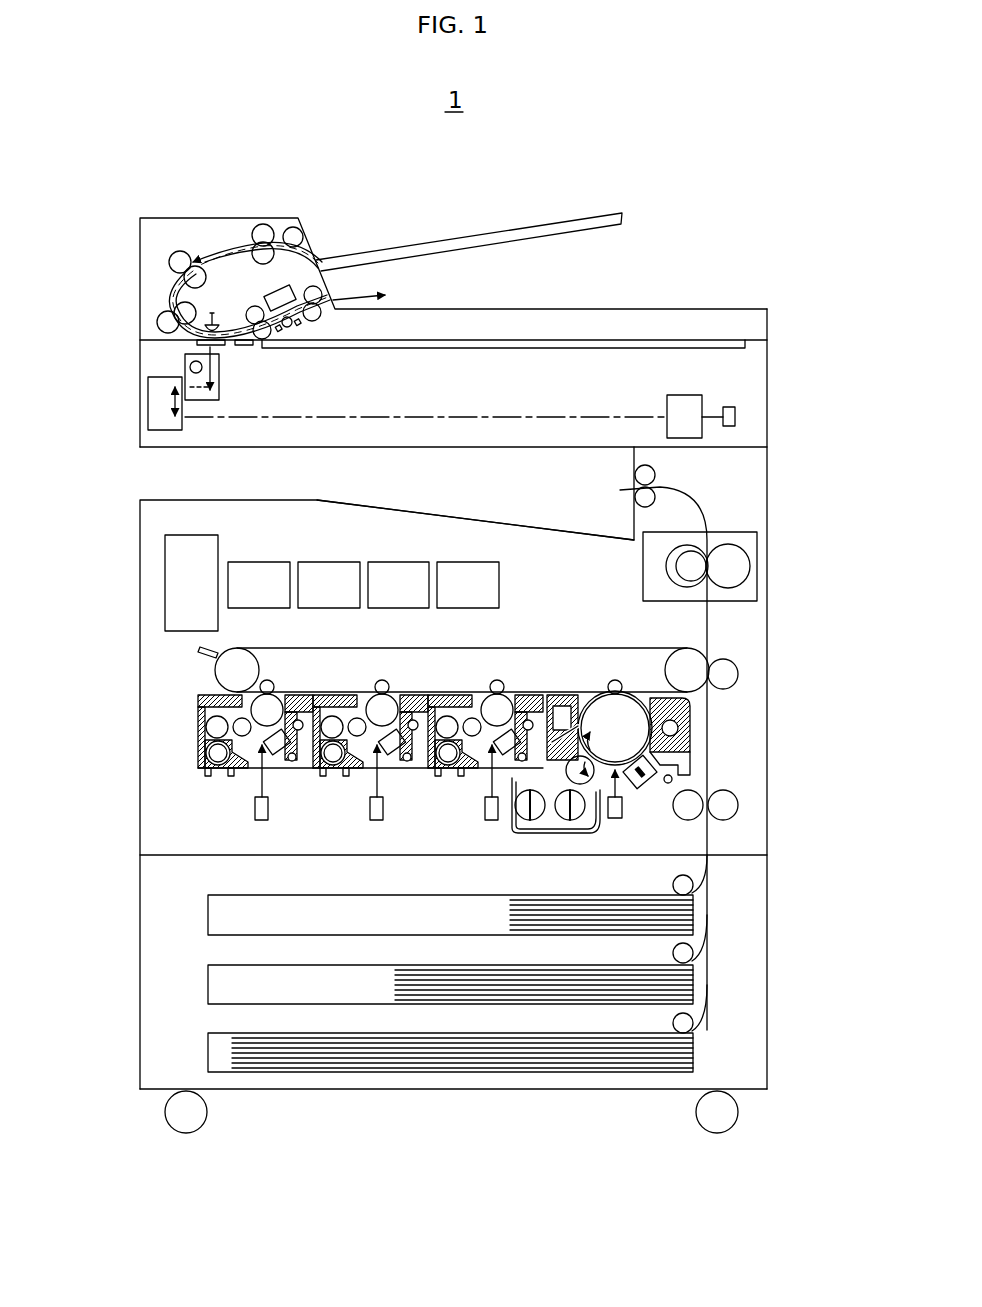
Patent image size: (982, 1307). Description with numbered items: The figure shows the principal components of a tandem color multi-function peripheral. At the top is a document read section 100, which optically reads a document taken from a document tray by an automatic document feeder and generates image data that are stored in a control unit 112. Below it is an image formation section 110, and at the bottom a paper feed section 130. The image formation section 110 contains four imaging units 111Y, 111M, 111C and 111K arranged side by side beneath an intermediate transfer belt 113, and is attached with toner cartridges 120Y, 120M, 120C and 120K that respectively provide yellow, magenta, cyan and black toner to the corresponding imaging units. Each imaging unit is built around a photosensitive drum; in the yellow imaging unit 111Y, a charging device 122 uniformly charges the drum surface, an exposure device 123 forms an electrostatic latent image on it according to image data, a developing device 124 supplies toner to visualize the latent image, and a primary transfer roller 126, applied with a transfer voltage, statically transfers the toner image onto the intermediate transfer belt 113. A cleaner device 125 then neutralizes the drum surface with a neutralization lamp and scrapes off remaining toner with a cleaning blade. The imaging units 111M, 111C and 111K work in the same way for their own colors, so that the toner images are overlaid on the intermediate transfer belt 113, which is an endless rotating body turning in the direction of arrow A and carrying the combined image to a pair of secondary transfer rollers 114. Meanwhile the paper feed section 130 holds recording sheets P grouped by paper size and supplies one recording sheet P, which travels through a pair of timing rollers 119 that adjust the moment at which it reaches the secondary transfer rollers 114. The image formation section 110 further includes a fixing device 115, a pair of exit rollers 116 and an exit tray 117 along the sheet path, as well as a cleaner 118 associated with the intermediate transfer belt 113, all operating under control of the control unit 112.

The document read section 100 is at (842, 215).
The image formation section 110 is at (842, 455).
The paper feed section 130 is at (842, 860).
The imaging unit 111Y is at (227, 789).
The imaging unit 111M is at (343, 789).
The imaging unit 111C is at (459, 789).
The imaging unit 111K is at (654, 791).
The control unit 112 is at (165, 588).
The intermediate transfer belt 113 is at (602, 648).
The pair of secondary transfer rollers 114 is at (740, 668).
The fixing device 115 is at (641, 558).
The pair of exit rollers 116 is at (652, 473).
The exit tray 117 is at (445, 516).
The cleaner 118 is at (200, 655).
The pair of timing rollers 119 is at (740, 805).
The toner cartridge 120Y is at (240, 562).
The toner cartridge 120M is at (310, 562).
The toner cartridge 120C is at (380, 562).
The toner cartridge 120K is at (450, 562).
The charging device 122 is at (283, 746).
The exposure device 123 is at (262, 822).
The developing device 124 is at (200, 740).
The cleaner device 125 is at (305, 702).
The primary transfer roller 126 is at (265, 680).
The recording sheet P is at (568, 895).
The arrow A is at (420, 638).